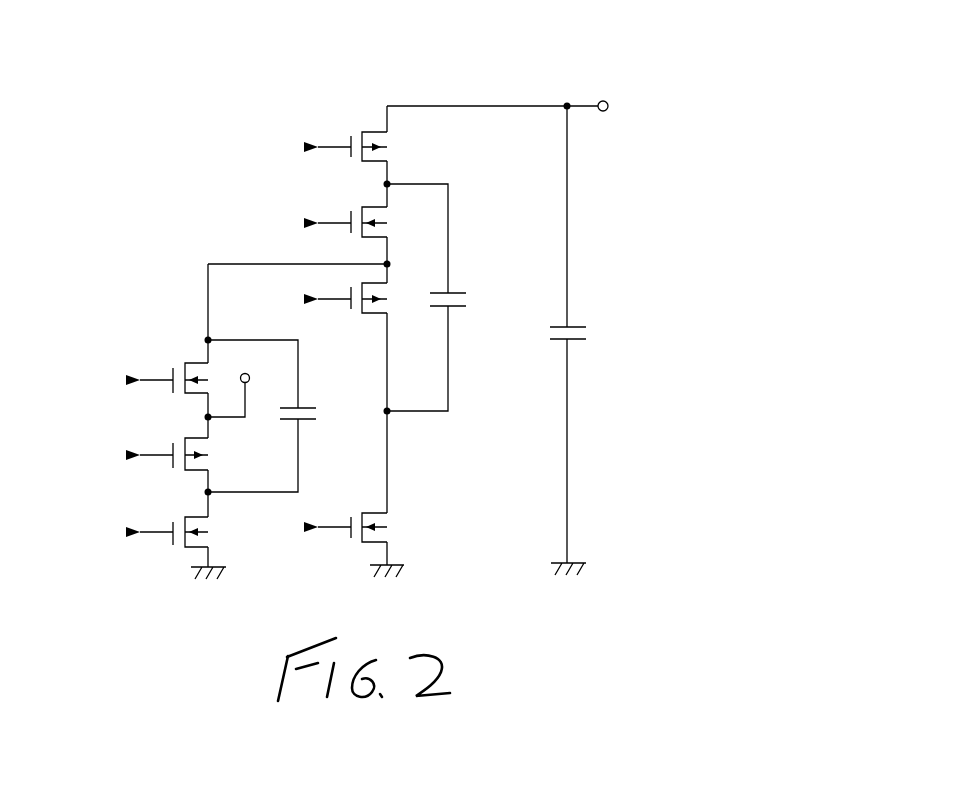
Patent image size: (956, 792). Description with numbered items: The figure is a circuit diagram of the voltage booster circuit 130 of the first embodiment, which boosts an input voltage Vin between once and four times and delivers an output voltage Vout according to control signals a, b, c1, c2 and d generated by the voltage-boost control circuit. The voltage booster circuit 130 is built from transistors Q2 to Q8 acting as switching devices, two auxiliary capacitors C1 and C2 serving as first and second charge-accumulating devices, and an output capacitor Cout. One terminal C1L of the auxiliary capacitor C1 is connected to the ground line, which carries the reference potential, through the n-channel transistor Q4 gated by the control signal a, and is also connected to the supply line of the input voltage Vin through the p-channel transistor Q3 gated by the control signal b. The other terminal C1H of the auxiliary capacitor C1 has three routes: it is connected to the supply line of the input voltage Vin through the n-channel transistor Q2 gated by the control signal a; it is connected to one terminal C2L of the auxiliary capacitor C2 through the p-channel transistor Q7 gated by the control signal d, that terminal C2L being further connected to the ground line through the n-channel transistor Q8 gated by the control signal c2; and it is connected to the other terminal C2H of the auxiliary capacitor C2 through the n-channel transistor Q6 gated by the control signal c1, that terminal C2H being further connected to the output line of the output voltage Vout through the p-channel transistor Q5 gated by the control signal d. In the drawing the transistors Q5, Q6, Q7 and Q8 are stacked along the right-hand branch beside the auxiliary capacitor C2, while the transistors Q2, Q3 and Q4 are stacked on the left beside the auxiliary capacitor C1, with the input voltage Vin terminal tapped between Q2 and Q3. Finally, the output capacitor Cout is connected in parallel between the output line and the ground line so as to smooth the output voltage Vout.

The voltage booster circuit 130 is at (442, 64).
The n-channel transistor Q2 is at (186, 362).
The p-channel transistor Q3 is at (187, 437).
The n-channel transistor Q4 is at (187, 516).
The p-channel transistor Q5 is at (363, 131).
The n-channel transistor Q6 is at (363, 206).
The p-channel transistor Q7 is at (364, 314).
The n-channel transistor Q8 is at (364, 512).
The auxiliary capacitor C1 is at (302, 406).
The terminal of auxiliary capacitor C1 C1H is at (290, 338).
The terminal of auxiliary capacitor C1 C1L is at (290, 491).
The auxiliary capacitor C2 is at (460, 293).
The terminal of auxiliary capacitor C2 C2H is at (448, 230).
The terminal of auxiliary capacitor C2 C2L is at (448, 328).
The output capacitor Cout is at (580, 326).
The input voltage Vin is at (239, 382).
The output voltage Vout is at (631, 105).
The control signal a is at (140, 456).
The control signal b is at (140, 455).
The control signal c1 is at (315, 223).
The control signal c2 is at (314, 527).
The control signal d is at (317, 223).